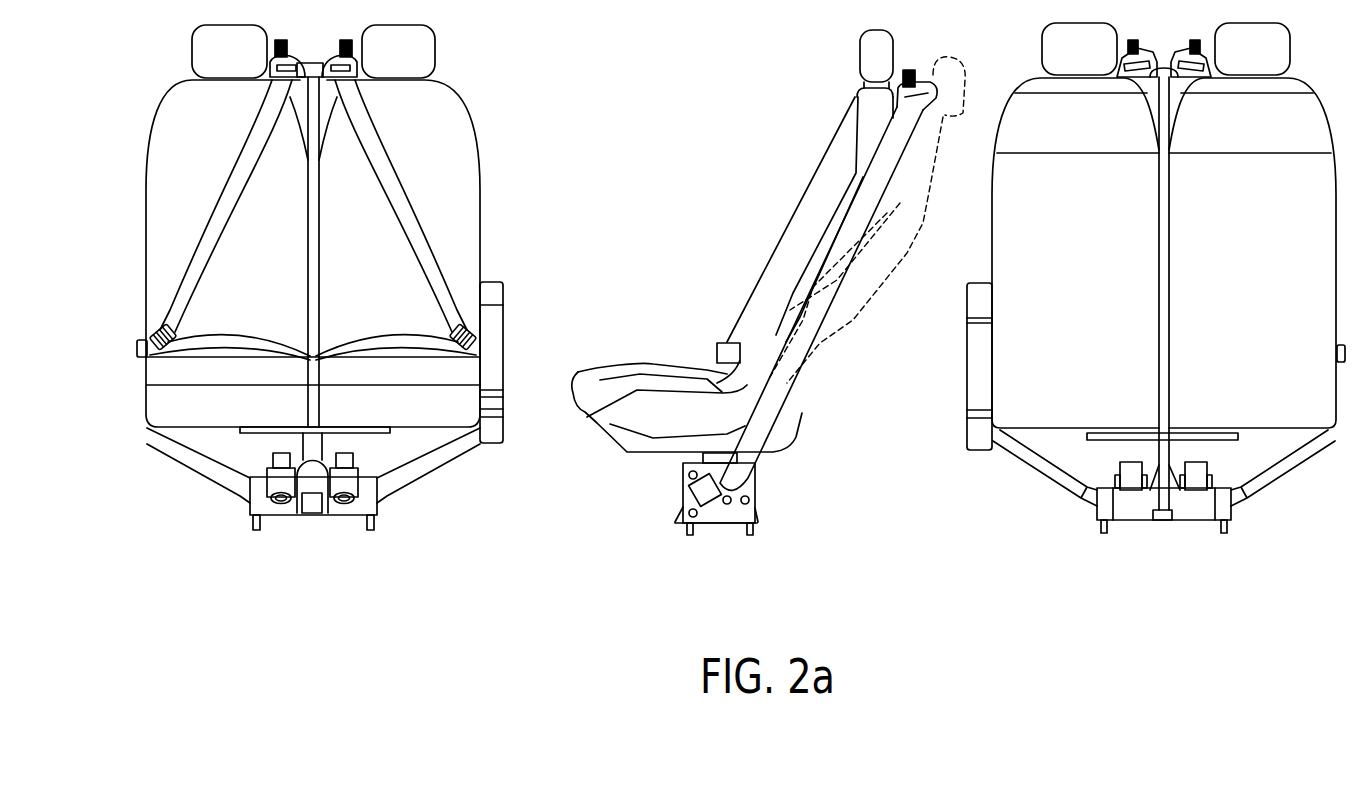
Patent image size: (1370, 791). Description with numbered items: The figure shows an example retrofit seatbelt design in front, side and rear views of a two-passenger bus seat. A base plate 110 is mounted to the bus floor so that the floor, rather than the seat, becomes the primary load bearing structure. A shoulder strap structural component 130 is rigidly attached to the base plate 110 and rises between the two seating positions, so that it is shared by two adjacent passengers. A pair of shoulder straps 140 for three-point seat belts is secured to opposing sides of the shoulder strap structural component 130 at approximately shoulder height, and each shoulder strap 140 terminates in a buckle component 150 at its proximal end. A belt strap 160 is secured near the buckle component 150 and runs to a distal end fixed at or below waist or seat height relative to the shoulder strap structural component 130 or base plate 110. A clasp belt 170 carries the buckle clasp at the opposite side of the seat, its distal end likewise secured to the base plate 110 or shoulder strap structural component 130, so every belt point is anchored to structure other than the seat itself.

The base plate 110 is at (310, 513).
The shoulder strap structural component 130 is at (750, 457).
The shoulder strap 140 is at (205, 248).
The buckle component 150 is at (162, 345).
The belt strap 160 is at (253, 335).
The clasp belt 170 is at (193, 462).